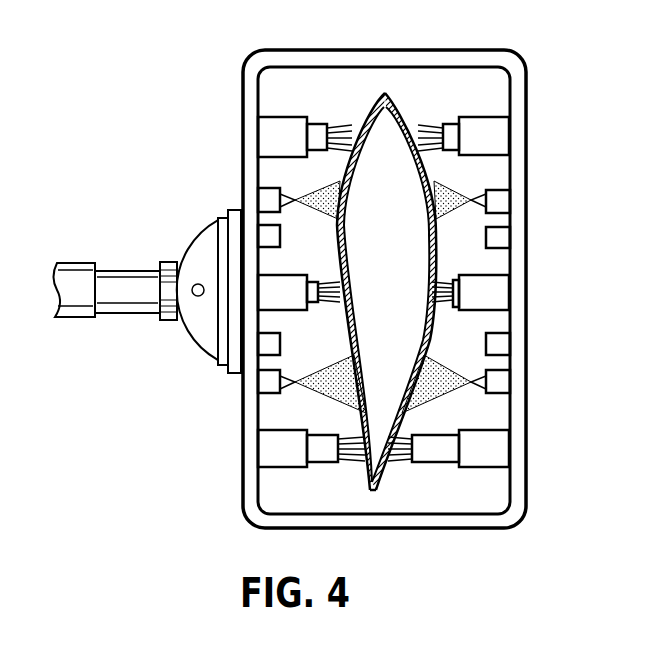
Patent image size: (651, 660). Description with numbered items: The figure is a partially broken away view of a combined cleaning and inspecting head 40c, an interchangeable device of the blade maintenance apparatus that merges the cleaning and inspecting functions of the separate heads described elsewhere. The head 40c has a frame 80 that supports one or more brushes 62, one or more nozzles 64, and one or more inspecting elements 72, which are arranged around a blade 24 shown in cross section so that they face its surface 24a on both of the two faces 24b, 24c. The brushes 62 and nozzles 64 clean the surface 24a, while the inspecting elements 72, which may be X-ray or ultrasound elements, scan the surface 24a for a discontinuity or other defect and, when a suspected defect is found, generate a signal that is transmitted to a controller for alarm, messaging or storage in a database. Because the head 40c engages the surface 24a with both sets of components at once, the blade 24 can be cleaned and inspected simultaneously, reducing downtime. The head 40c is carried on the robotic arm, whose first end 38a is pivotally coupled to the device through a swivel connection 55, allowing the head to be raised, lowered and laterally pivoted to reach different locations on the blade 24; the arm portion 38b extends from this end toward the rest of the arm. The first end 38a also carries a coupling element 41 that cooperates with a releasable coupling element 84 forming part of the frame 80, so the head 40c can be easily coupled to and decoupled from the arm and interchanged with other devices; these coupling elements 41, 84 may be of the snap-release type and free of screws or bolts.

The blade 24 is at (383, 488).
The surface 24a is at (446, 224).
The face 24b is at (373, 107).
The face 24c is at (400, 107).
The first end 38a is at (172, 262).
The shaft 38b is at (122, 314).
The combined cleaning and inspecting head 40c is at (217, 96).
The coupling element 41 is at (227, 213).
The swivel connection 55 is at (199, 347).
The brushes 62 is at (285, 117).
The nozzles 64 is at (263, 188).
The inspecting elements 72 is at (280, 230).
The frame 80 is at (287, 52).
The releasable coupling element 84 is at (233, 377).